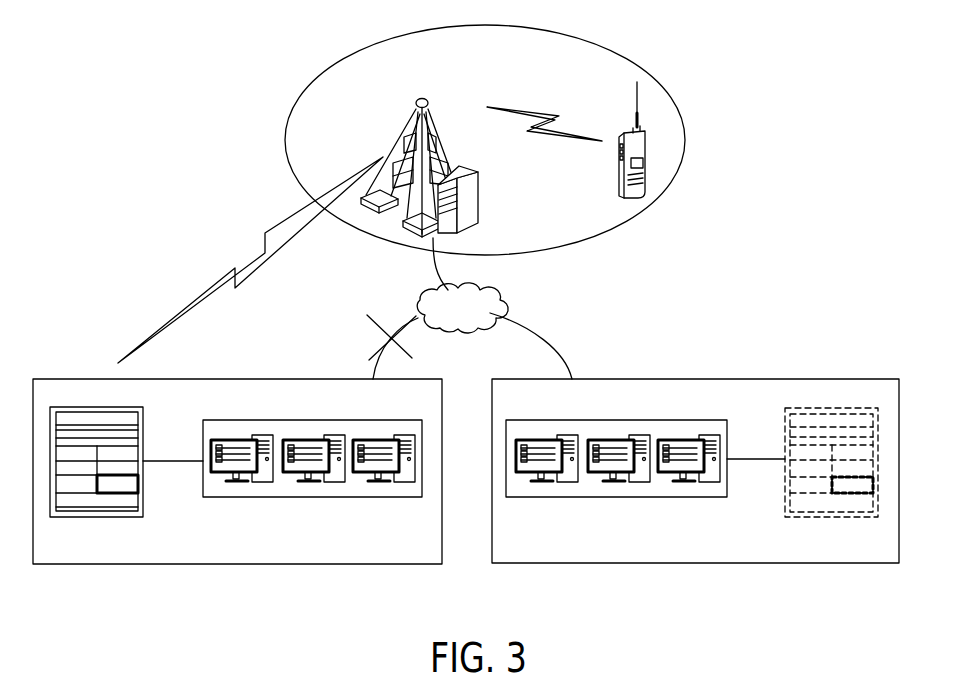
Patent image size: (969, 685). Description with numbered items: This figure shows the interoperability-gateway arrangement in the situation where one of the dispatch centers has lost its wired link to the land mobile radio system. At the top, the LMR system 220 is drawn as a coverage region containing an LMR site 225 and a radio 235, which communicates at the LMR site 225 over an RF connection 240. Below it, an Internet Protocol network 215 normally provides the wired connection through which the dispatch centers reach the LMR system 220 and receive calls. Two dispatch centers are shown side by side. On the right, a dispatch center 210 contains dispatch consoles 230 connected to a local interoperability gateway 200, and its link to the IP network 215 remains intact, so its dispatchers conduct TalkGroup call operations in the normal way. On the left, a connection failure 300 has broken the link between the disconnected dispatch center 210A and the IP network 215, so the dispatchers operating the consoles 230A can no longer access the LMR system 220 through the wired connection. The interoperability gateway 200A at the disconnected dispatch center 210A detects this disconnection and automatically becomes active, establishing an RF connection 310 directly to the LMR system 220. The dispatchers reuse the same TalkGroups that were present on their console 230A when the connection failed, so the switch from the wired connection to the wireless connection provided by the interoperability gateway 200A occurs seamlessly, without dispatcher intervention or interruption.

The interoperability gateway 200 is at (832, 408).
The interoperability gateway at disconnected dispatch center 200A is at (70, 407).
The dispatch center 210 is at (608, 566).
The disconnected dispatch center 210A is at (328, 565).
The Internet Protocol (IP) network 215 is at (503, 298).
The LMR system 220 is at (592, 43).
The LMR site 225 is at (451, 104).
The dispatch console 230 is at (587, 497).
The dispatch console at disconnected dispatch center 230A is at (292, 497).
The radio 235 is at (618, 180).
The RF connection 240 is at (560, 116).
The connection failure 300 is at (358, 338).
The RF connection established by gateway 310 is at (223, 274).